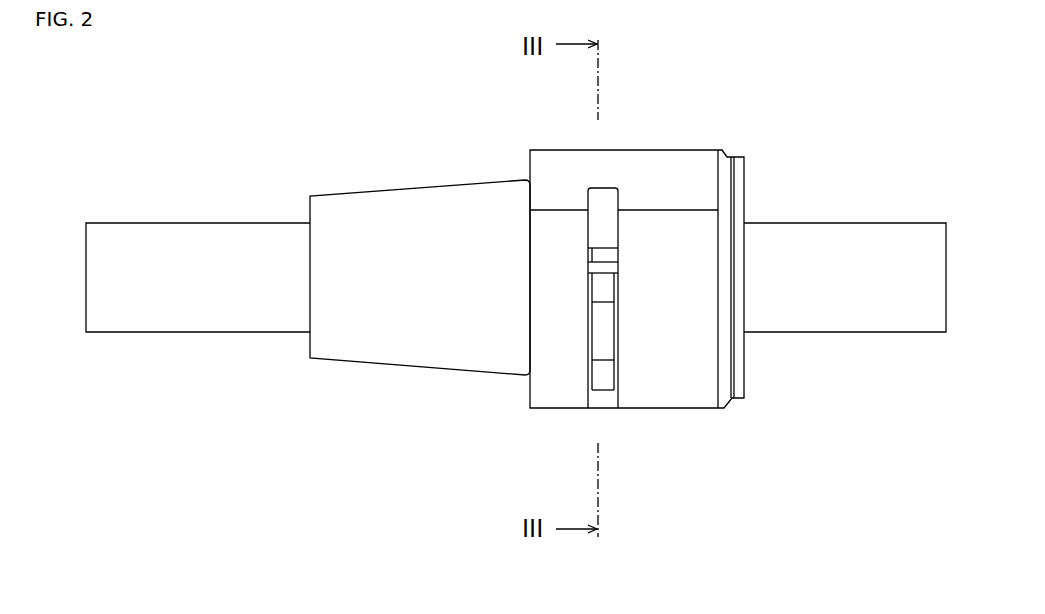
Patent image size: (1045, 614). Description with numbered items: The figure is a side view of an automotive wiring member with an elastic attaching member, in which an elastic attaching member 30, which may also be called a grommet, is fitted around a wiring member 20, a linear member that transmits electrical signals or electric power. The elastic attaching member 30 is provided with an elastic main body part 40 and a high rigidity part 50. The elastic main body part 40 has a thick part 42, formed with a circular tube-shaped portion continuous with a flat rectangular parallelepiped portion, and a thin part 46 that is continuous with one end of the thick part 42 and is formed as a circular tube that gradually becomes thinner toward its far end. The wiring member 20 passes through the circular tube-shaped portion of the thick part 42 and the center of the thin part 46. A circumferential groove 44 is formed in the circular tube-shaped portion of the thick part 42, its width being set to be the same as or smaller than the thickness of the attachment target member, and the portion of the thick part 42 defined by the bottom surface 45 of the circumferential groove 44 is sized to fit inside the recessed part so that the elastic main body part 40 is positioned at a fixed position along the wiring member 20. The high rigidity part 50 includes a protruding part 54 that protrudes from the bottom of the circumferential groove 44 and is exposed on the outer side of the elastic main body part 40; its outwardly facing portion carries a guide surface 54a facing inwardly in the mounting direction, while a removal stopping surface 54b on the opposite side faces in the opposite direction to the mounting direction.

The wiring member 20 is at (188, 222).
The thin part 46 is at (345, 195).
The elastic attaching member 30 is at (521, 136).
The elastic main body part 40 is at (754, 242).
The thick part 42 is at (705, 180).
The high rigidity part 50 is at (601, 262).
The removal stopping surface 54b is at (610, 257).
The protruding part 54 is at (614, 266).
The guide surface 54a is at (607, 293).
The bottom surface 45 is at (642, 316).
The circumferential groove 44 is at (597, 350).